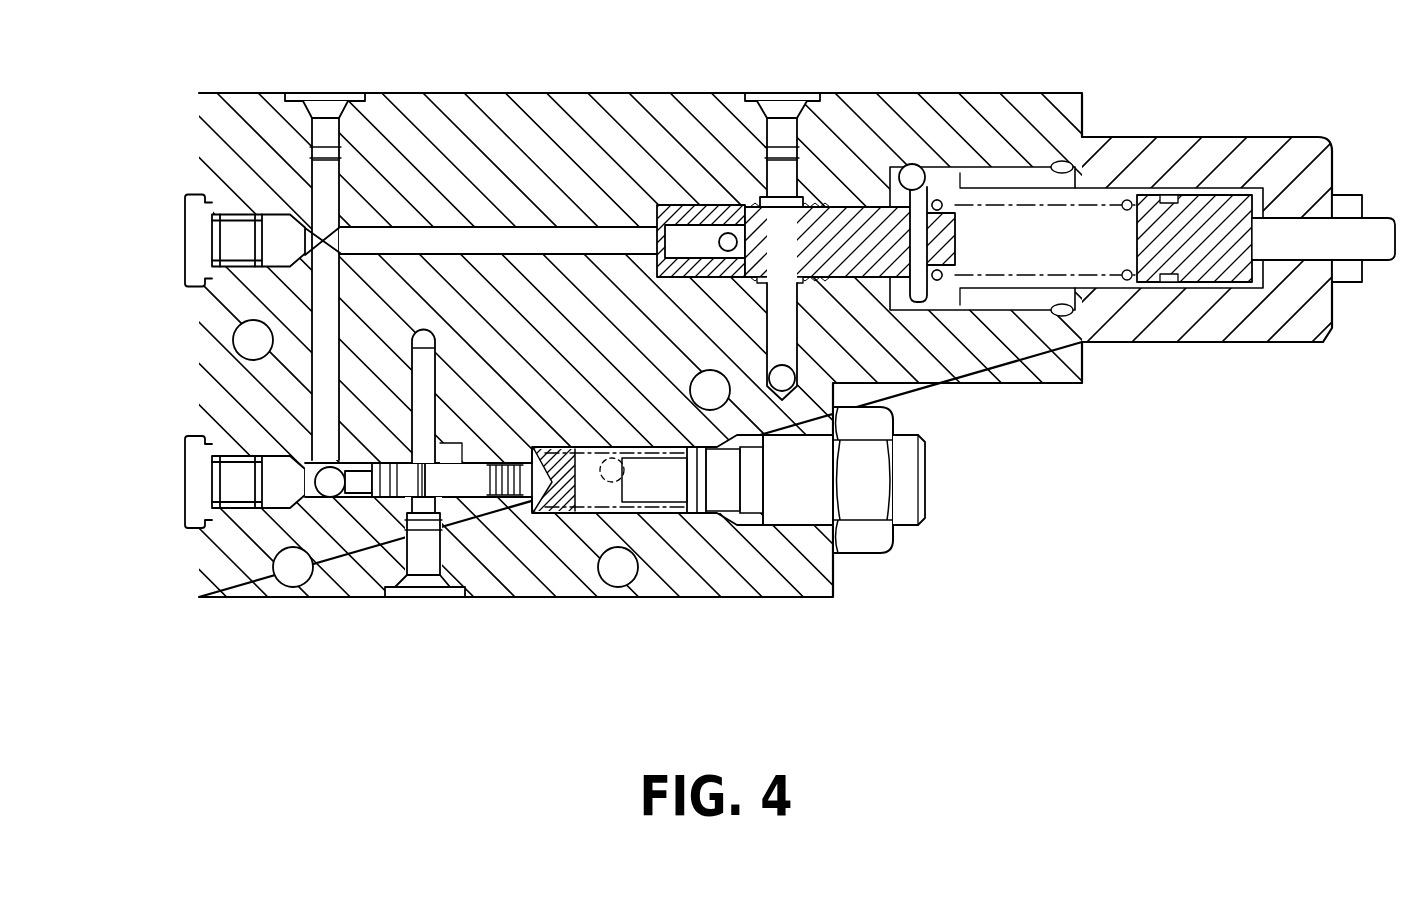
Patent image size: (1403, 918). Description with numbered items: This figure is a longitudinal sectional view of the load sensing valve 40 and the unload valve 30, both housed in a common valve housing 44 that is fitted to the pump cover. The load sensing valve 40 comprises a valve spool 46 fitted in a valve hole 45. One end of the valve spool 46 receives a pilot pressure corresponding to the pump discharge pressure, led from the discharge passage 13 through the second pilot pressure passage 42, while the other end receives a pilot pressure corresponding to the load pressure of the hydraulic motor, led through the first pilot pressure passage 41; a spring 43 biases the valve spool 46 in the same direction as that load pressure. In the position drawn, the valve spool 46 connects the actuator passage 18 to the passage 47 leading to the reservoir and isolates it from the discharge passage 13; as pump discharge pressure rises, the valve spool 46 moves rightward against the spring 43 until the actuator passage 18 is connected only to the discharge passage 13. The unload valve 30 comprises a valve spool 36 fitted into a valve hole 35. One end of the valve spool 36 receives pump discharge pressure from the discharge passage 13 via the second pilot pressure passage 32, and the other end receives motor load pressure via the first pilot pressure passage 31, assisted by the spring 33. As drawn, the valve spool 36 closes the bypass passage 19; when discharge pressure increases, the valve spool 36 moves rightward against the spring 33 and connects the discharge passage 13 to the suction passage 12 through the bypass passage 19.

The suction passage 12 is at (757, 200).
The discharge passage 13 is at (318, 407).
The actuator passage 18 is at (412, 375).
The bypass passage 19 is at (481, 230).
The unload valve 30 is at (1166, 120).
The first pilot pressure passage 31 is at (906, 172).
The second pilot pressure passage 32 is at (175, 457).
The spring 33 is at (938, 180).
The valve hole 35 is at (876, 215).
The valve spool 36 is at (832, 205).
The load sensing valve 40 is at (848, 558).
The first pilot pressure passage 41 is at (588, 490).
The second pilot pressure passage 42 is at (439, 456).
The spring 43 is at (680, 520).
The valve housing 44 is at (595, 103).
The valve hole 45 is at (352, 497).
The valve spool 46 is at (387, 497).
The passage 47 is at (475, 507).